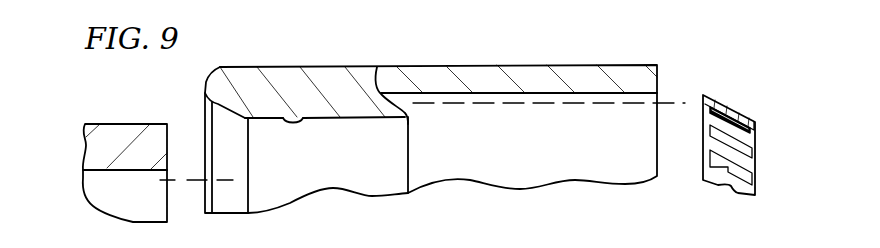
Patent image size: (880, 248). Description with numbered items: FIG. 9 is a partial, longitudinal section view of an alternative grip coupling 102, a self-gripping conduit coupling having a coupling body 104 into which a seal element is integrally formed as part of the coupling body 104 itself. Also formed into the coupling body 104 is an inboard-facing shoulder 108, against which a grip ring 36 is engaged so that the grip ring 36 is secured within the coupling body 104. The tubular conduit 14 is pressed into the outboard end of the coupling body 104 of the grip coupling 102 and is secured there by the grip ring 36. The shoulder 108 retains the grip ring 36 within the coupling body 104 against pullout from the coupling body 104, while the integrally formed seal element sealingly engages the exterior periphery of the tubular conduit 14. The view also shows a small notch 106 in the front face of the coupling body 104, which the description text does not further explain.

The tubular conduit 14 is at (110, 127).
The grip ring 36 is at (752, 104).
The grip coupling 102 is at (451, 110).
The coupling body 104 is at (315, 76).
The notch / groove 106 is at (295, 123).
The inboard-facing shoulder 108 is at (377, 67).